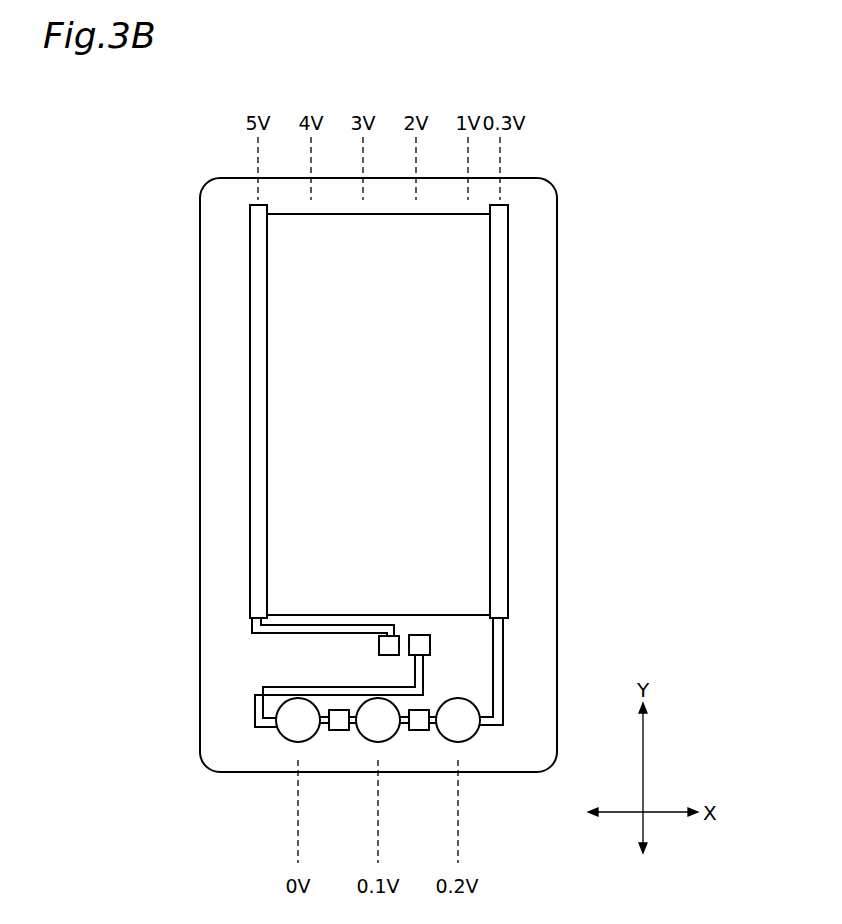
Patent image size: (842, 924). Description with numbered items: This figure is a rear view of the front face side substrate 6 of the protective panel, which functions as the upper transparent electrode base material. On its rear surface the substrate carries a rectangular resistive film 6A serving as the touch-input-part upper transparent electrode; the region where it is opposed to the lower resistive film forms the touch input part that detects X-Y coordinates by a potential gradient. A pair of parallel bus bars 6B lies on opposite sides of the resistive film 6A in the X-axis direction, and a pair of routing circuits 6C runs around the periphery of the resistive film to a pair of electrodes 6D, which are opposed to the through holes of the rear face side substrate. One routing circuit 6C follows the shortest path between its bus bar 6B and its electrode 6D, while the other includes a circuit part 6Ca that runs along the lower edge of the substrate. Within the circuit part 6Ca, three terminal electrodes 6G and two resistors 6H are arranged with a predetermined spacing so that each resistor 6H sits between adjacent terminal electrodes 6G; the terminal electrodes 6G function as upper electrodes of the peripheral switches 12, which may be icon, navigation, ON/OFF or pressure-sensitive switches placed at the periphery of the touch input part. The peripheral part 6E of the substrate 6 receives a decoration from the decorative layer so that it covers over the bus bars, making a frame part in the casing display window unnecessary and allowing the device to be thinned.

The front face side substrate 6 is at (592, 177).
The resistive film 6A is at (458, 380).
The bus bars 6B is at (257, 335).
The routing circuits 6C is at (305, 635).
The circuit part 6Ca is at (268, 723).
The electrodes 6D is at (420, 648).
The peripheral part 6E is at (537, 480).
The terminal electrodes 6G is at (385, 781).
The resistors 6H is at (338, 727).
The peripheral switch 12 is at (468, 727).